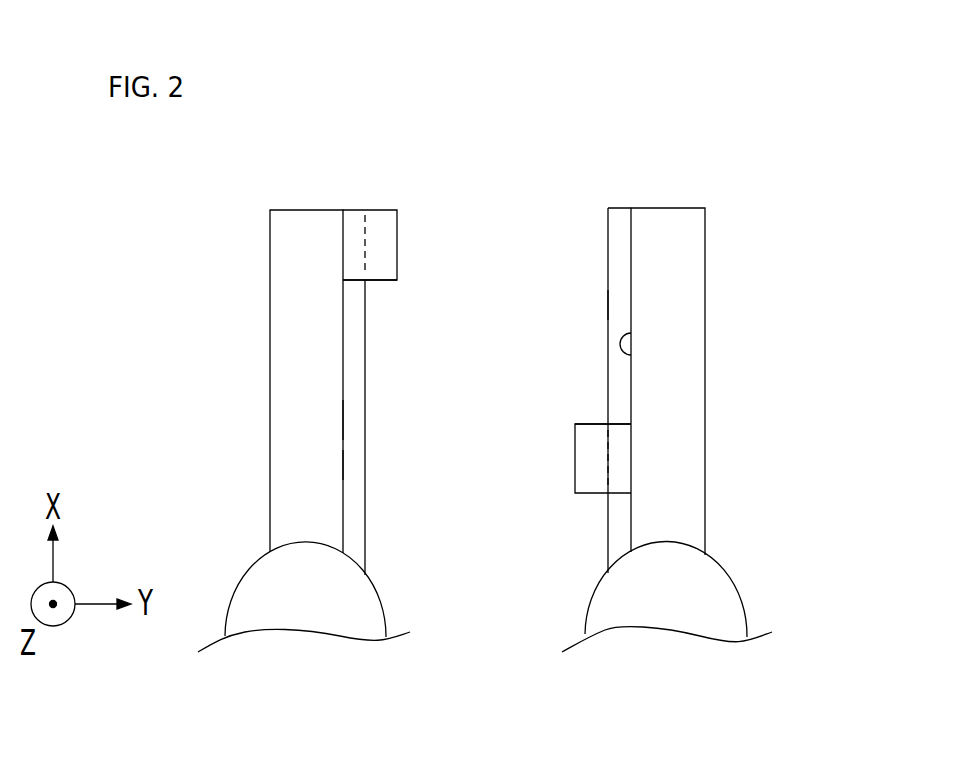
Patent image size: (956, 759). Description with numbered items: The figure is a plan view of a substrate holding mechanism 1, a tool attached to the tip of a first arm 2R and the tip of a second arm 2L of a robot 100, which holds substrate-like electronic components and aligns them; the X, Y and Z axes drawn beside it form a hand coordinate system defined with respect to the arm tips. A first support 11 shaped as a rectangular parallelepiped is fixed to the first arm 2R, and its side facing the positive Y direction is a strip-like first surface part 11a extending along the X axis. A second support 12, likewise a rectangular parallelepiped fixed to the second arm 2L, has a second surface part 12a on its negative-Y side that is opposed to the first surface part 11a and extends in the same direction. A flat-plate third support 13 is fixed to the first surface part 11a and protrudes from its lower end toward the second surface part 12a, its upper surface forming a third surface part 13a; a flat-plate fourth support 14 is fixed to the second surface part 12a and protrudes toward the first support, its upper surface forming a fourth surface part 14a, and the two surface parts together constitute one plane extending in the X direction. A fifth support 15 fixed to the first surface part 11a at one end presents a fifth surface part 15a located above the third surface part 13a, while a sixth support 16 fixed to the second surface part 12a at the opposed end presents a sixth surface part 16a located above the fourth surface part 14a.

The substrate holding mechanism 1 is at (524, 148).
The first support 11 is at (705, 277).
The first surface part 11a is at (631, 355).
The second support 12 is at (268, 317).
The second surface part 12a is at (345, 418).
The third support 13 is at (620, 237).
The third surface part 13a is at (617, 300).
The fourth support 14 is at (362, 390).
The fourth surface part 14a is at (355, 463).
The fifth support 15 is at (588, 452).
The fifth surface part 15a is at (593, 422).
The sixth support 16 is at (388, 240).
The sixth surface part 16a is at (380, 283).
The second robot arm 2L is at (383, 613).
The first robot arm 2R is at (744, 613).
The robot 100 is at (513, 724).